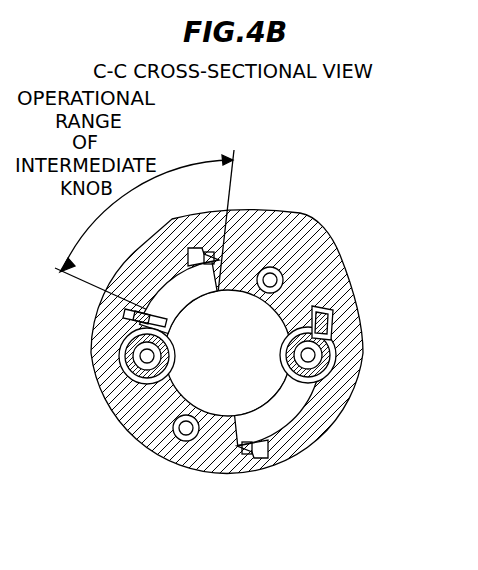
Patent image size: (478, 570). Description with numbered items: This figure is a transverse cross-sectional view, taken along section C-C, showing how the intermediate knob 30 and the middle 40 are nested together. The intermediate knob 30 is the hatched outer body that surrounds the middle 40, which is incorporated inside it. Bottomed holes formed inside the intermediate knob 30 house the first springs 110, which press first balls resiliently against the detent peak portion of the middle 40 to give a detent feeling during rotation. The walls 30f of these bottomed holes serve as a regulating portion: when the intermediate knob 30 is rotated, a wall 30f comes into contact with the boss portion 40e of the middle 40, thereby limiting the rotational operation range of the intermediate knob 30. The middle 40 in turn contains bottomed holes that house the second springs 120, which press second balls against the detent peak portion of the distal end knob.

The intermediate knob 30 is at (255, 213).
The wall 30f is at (204, 252).
The middle 40 is at (140, 397).
The boss portion 40e is at (137, 323).
The first spring 110 is at (275, 268).
The second spring 120 is at (309, 362).